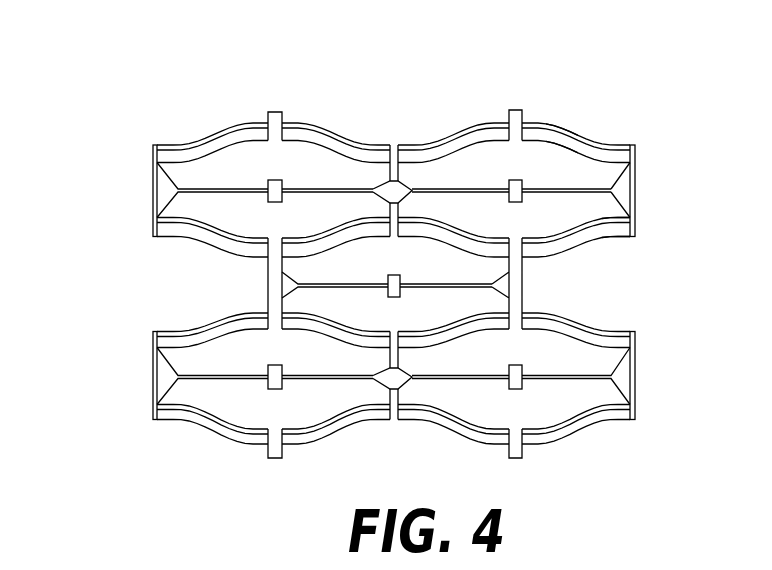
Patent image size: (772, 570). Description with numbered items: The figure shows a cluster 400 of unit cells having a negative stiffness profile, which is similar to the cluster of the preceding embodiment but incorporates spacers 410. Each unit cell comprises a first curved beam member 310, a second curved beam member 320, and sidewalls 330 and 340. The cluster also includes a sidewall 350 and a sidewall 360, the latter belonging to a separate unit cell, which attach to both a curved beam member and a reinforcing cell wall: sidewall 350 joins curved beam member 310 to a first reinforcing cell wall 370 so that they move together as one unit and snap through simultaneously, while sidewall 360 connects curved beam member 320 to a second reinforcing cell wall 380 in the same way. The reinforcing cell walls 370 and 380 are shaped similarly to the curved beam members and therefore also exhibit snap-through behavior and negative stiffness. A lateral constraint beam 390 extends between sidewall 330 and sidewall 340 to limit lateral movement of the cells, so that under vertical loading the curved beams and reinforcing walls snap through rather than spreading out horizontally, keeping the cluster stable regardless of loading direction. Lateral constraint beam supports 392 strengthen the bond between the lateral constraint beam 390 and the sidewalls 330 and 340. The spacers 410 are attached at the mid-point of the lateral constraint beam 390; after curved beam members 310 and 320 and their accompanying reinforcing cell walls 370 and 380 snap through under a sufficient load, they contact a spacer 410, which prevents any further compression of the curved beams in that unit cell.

The cluster of cells 400 is at (72, 220).
The first curved beam member 310 is at (560, 147).
The second curved beam member 320 is at (538, 250).
The sidewall 330 is at (393, 167).
The sidewall 340 is at (638, 222).
The sidewall 350 is at (512, 110).
The sidewall 360 is at (518, 294).
The first reinforcing cell wall 370 is at (450, 137).
The second reinforcing cell wall 380 is at (638, 233).
The lateral constraint beam 390 is at (606, 185).
The lateral constraint beam support 392 is at (373, 191).
The spacer 410 is at (517, 180).